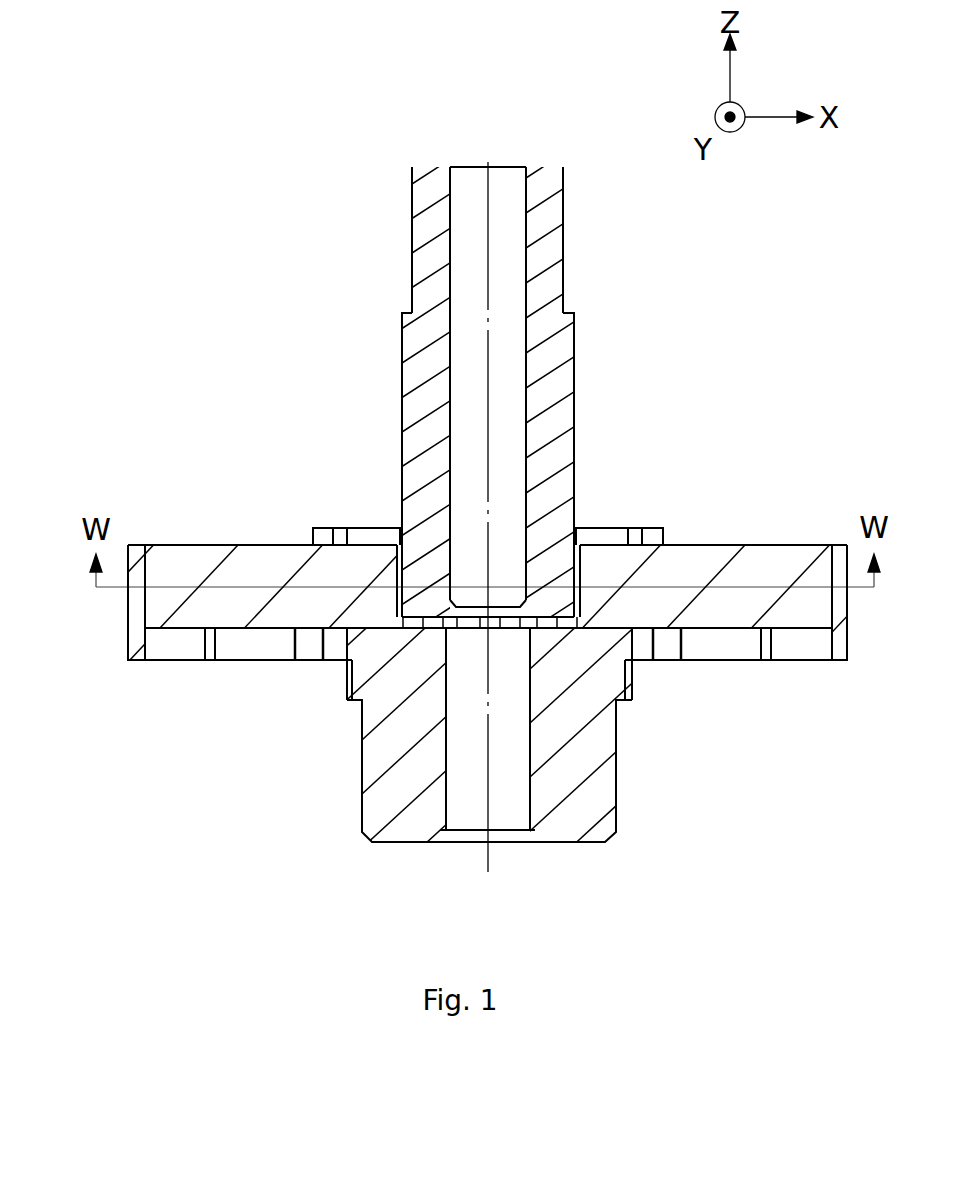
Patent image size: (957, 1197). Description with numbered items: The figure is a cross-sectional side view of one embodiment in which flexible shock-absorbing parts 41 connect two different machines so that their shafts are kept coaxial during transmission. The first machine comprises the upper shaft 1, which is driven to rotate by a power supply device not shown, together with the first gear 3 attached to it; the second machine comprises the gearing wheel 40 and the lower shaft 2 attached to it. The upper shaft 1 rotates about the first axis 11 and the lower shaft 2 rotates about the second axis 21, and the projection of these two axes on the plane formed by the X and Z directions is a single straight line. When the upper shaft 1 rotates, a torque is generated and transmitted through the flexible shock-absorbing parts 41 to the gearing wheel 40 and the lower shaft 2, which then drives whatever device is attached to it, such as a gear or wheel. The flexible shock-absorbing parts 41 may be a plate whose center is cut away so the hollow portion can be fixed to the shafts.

The upper shaft 1 is at (442, 446).
The first axis 11 is at (488, 212).
The lower shaft 2 is at (426, 766).
The second axis 21 is at (487, 808).
The first gear 3 is at (377, 535).
The gearing wheel 40 is at (255, 647).
The flexible shock-absorbing parts 41 is at (282, 573).